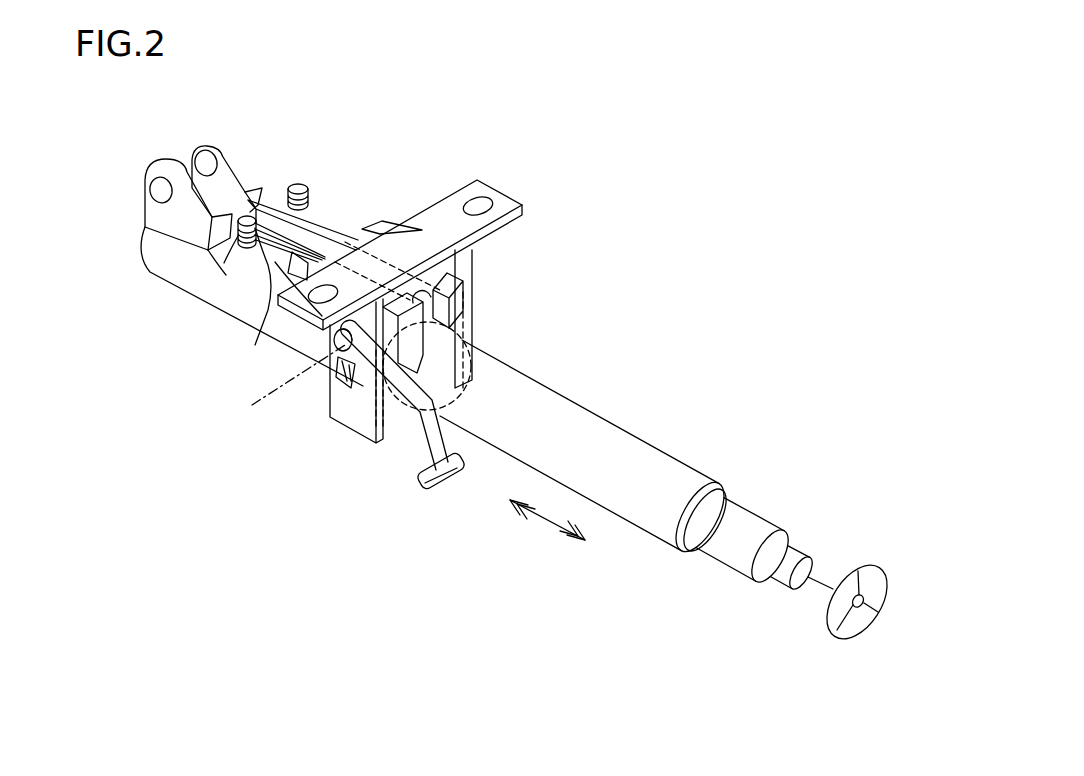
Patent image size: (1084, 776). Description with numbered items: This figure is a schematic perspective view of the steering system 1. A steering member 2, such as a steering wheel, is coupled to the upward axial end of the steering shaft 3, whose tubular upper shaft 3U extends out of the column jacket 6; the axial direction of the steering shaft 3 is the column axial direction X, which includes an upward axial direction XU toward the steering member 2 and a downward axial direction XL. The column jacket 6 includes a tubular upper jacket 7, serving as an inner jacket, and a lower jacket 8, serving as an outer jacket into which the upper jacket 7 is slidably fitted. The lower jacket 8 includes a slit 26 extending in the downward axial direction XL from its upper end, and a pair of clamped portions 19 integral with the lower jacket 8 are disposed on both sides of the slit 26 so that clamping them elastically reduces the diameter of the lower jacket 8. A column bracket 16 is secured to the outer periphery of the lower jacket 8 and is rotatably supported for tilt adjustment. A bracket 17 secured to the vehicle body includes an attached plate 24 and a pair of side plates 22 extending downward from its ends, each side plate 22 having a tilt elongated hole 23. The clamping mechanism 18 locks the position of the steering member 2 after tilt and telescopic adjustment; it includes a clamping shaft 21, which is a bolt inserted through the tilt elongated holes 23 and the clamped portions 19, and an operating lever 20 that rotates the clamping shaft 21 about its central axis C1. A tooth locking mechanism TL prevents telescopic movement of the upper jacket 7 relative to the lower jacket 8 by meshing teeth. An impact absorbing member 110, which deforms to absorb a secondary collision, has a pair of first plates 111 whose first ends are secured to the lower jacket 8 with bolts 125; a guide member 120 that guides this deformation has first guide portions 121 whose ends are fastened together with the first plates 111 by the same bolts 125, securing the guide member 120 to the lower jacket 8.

The steering system 1 is at (805, 438).
The steering member 2 is at (868, 568).
The steering shaft 3 is at (738, 500).
The upper shaft 3U is at (760, 527).
The column jacket 6 is at (660, 436).
The upper jacket 7 is at (597, 428).
The lower jacket 8 is at (160, 258).
The column bracket 16 is at (226, 150).
The bracket 17 is at (368, 422).
The clamping mechanism 18 is at (318, 350).
The clamped portions 19 is at (398, 229).
The operating lever 20 is at (413, 433).
The clamping shaft 21 is at (322, 378).
The side plates 22 is at (477, 258).
The tilt elongated hole 23 is at (457, 288).
The attached plate 24 is at (452, 202).
The slit 26 is at (470, 335).
The impact absorbing member 110 is at (328, 338).
The first plates 111 is at (356, 230).
The guide member 120 is at (344, 216).
The first guide portions 121 is at (312, 202).
The bolts 125 is at (250, 212).
The central axis C1 is at (280, 382).
The tooth locking mechanism TL is at (444, 311).
The column axial direction X is at (541, 520).
The downward axial direction XL is at (504, 502).
The upward axial direction XU is at (590, 540).